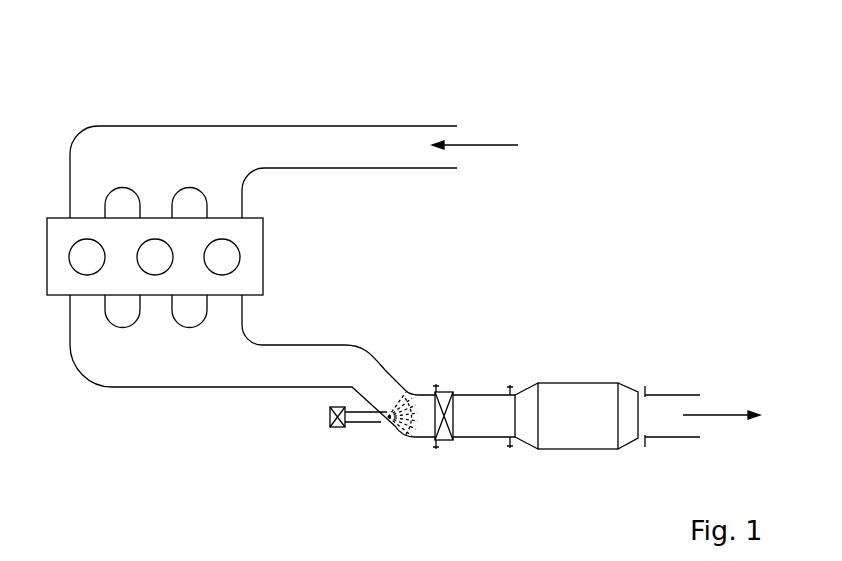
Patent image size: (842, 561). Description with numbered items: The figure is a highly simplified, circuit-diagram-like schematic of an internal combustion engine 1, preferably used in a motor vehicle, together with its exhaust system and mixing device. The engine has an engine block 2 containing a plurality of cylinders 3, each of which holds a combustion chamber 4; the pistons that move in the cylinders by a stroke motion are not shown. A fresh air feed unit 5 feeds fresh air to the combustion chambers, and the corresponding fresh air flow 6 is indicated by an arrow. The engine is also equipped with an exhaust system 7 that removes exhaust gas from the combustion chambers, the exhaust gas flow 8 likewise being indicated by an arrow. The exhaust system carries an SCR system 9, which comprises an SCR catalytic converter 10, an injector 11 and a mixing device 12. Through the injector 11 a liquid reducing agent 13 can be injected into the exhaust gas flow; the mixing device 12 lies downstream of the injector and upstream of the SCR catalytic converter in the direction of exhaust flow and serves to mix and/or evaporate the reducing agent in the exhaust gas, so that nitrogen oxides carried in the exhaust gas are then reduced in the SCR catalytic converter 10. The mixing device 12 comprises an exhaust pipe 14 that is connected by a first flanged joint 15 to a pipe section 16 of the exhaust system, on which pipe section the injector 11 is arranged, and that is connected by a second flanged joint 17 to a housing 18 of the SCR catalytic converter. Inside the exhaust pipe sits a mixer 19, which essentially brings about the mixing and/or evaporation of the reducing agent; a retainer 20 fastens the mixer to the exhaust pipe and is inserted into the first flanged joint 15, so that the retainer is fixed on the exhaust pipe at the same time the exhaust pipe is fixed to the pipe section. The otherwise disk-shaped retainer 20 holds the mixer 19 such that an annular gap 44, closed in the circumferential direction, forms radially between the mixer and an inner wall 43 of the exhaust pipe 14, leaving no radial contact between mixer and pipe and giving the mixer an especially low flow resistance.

The internal combustion engine 1 is at (634, 155).
The engine block 2 is at (276, 243).
The cylinders 3 is at (86, 239).
The combustion chamber 4 is at (81, 268).
The fresh air feed unit 5 is at (334, 121).
The fresh air flow 6 is at (493, 145).
The exhaust system 7 is at (205, 401).
The exhaust gas flow 8 is at (727, 412).
The SCR system 9 is at (450, 305).
The SCR catalytic converter 10 is at (569, 423).
The injector 11 is at (330, 417).
The mixing device 12 is at (470, 451).
The reducing agent 13 is at (390, 393).
The exhaust pipe 14 is at (490, 440).
The first flanged joint 15 is at (436, 384).
The pipe section 16 is at (318, 345).
The second flanged joint 17 is at (509, 384).
The housing 18 is at (537, 383).
The mixer 19 is at (441, 449).
The retainer 20 is at (433, 435).
The inner wall 43 is at (498, 438).
The annular gap 44 is at (452, 392).